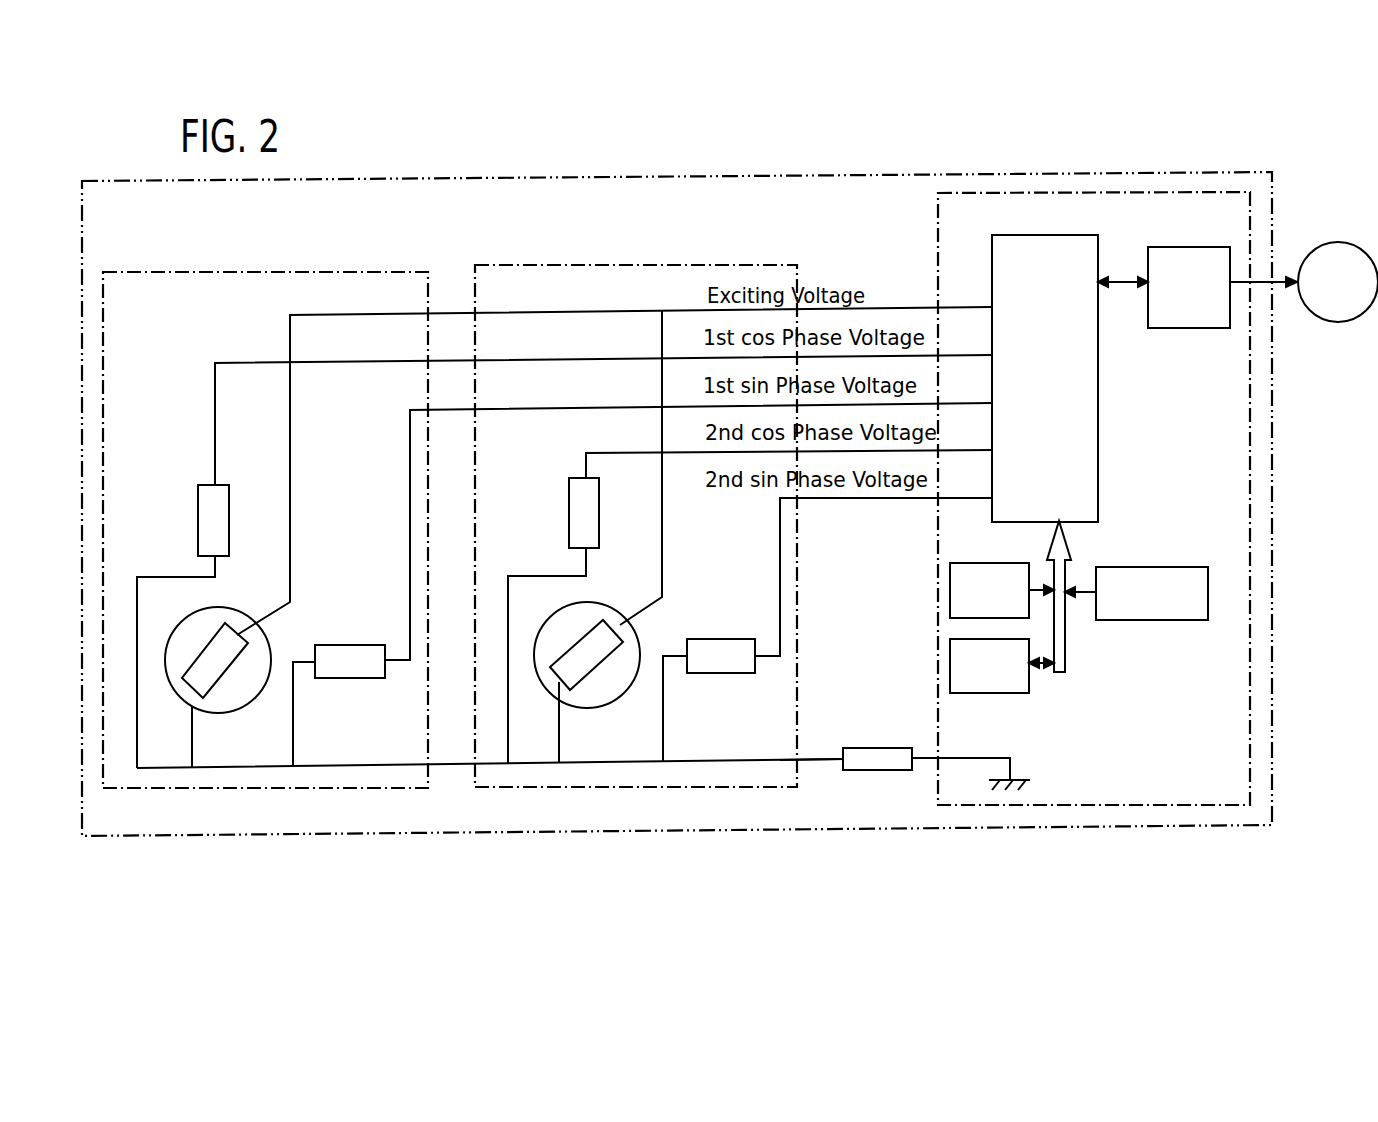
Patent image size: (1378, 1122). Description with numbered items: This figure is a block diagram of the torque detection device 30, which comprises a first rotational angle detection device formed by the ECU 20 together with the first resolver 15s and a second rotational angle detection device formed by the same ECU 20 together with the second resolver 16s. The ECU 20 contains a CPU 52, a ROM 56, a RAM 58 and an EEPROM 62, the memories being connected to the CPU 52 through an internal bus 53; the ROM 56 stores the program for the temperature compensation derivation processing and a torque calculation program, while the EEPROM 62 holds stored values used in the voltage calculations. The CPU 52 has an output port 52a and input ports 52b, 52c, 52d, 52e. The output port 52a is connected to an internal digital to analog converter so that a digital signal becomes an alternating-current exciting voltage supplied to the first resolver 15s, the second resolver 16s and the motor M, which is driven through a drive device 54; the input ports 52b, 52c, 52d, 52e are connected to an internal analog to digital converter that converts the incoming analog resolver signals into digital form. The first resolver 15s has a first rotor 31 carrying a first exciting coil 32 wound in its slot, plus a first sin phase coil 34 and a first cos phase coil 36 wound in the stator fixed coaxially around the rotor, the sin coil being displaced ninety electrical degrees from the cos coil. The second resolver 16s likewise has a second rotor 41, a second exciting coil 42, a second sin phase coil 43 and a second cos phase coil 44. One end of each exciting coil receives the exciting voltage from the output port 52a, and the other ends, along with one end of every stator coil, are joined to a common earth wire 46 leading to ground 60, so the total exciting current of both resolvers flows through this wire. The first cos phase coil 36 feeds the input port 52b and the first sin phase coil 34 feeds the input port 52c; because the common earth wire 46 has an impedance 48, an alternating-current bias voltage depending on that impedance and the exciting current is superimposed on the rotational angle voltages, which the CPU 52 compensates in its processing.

The torque detection device 30 is at (407, 180).
The first resolver 15s is at (157, 272).
The second resolver 16s is at (533, 265).
The ECU 20 is at (935, 222).
The CPU 52 is at (1080, 237).
The output port 52a is at (990, 299).
The input port 52b is at (993, 346).
The input port 52c is at (993, 395).
The input port 52d is at (993, 441).
The input port 52e is at (994, 489).
The internal bus 53 is at (1065, 637).
The drive device 54 is at (1180, 250).
The ROM 56 is at (990, 570).
The RAM 58 is at (1002, 688).
The ground 60 is at (1015, 780).
The EEPROM 62 is at (1150, 568).
The motor M is at (1335, 255).
The first rotor 31 is at (253, 702).
The first exciting coil 32 is at (205, 670).
The first sin phase coil 34 is at (365, 660).
The first cos phase coil 36 is at (207, 533).
The second rotor 41 is at (627, 688).
The second exciting coil 42 is at (583, 658).
The second sin phase coil 43 is at (725, 658).
The second cos phase coil 44 is at (578, 528).
The common earth wire 46 is at (820, 760).
The impedance 48 is at (867, 762).